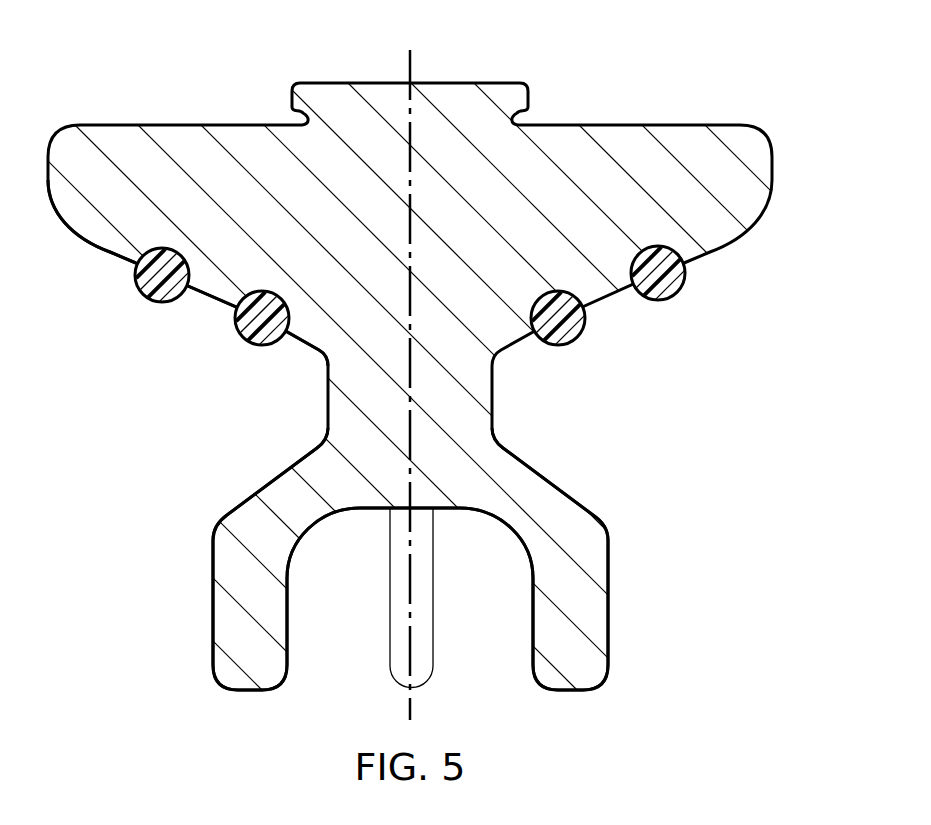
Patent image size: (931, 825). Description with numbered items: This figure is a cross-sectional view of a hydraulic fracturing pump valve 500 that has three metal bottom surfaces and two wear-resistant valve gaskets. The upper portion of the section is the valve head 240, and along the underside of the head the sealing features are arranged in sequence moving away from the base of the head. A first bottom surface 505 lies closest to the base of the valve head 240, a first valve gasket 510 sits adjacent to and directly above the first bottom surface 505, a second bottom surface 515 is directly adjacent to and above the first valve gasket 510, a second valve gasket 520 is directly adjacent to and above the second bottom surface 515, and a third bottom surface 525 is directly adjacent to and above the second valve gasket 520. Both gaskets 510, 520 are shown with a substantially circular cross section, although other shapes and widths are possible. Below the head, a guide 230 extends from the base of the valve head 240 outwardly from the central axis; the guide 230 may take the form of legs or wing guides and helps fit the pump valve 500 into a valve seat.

The pump valve 500 is at (465, 372).
The valve head 240 is at (322, 208).
The guide 230 is at (217, 611).
The third bottom surface 525 is at (110, 250).
The second valve gasket 520 is at (155, 302).
The second bottom surface 515 is at (212, 304).
The first valve gasket 510 is at (254, 348).
The first bottom surface 505 is at (308, 344).